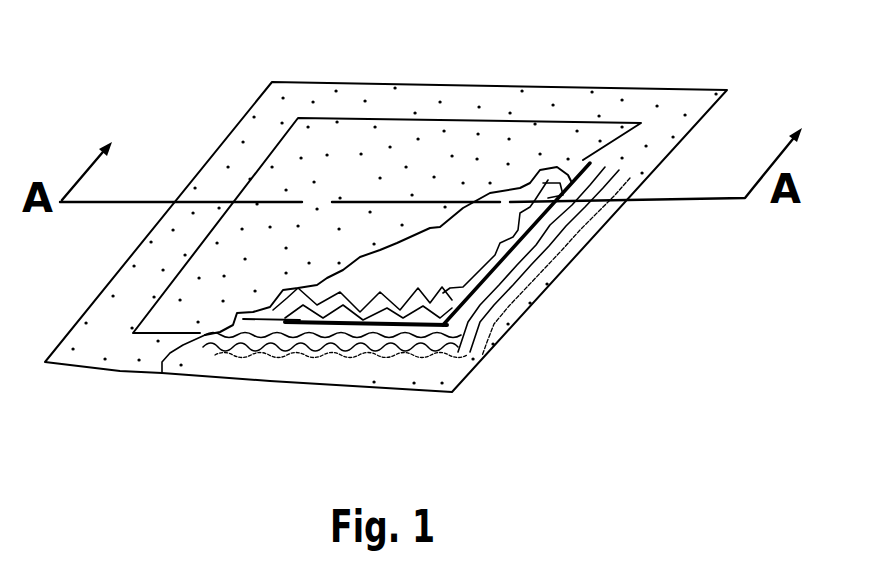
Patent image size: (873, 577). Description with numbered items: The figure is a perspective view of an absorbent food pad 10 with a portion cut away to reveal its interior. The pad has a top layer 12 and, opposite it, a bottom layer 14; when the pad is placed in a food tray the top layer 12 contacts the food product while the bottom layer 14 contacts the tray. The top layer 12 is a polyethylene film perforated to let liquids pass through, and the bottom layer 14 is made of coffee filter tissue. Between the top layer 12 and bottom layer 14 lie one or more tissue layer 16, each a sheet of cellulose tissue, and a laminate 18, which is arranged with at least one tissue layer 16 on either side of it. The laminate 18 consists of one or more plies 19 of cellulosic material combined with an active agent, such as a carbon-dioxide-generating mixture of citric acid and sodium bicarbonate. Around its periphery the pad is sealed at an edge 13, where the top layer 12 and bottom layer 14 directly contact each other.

The absorbent food pad 10 is at (134, 100).
The top layer 12 is at (347, 140).
The edge 13 is at (669, 118).
The bottom layer 14 is at (479, 352).
The tissue layer 16 is at (530, 197).
The laminate 18 is at (323, 332).
The plies 19 is at (392, 328).